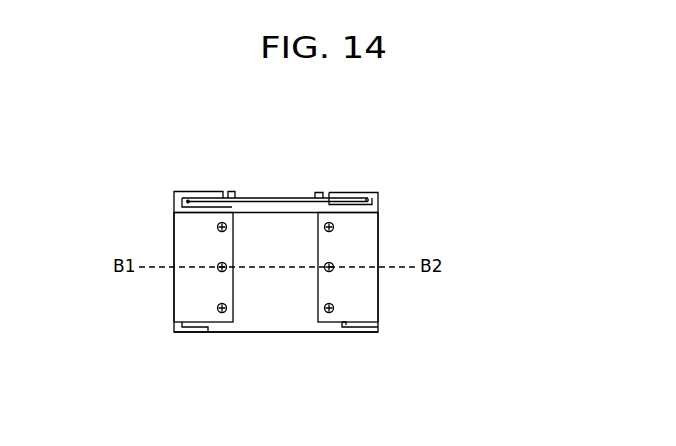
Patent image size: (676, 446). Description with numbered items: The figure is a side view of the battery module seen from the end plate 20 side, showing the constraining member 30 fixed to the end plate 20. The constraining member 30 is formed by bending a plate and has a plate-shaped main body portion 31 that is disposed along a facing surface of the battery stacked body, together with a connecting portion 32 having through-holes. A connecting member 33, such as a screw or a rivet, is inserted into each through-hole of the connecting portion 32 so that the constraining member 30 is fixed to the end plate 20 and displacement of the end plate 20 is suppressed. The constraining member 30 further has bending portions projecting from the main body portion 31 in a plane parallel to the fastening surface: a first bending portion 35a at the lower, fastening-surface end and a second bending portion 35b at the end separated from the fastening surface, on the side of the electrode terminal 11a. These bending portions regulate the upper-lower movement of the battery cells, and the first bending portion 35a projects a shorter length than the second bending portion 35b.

The constraining member 30 is at (385, 245).
The end plate 20 is at (277, 217).
The main body portion 31 is at (178, 207).
The connecting portion 32 is at (183, 290).
The connecting member 33 is at (212, 247).
The first bending portion 35a is at (192, 335).
The second bending portion 35b is at (203, 192).
The electrode terminal 11a is at (232, 191).